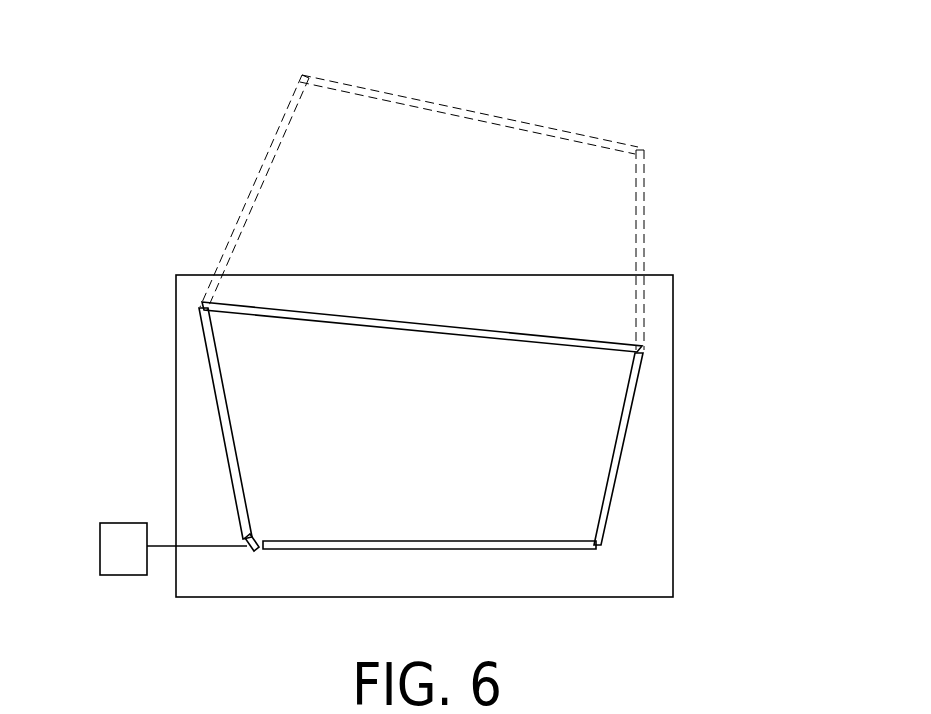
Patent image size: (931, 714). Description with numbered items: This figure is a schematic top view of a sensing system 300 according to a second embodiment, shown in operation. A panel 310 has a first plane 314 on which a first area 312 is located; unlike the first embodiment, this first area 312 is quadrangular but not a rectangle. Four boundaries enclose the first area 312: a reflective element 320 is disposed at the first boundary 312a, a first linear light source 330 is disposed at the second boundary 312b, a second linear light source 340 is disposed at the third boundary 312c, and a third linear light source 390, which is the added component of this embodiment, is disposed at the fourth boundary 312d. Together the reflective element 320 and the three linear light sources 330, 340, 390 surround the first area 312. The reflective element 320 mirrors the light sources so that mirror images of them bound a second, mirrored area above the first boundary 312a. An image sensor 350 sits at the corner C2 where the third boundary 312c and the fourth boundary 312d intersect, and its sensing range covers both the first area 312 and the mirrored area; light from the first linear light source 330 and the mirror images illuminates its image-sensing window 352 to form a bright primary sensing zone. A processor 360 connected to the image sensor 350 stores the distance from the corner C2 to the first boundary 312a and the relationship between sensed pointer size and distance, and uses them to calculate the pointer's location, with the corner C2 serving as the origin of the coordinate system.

The sensing system 300 is at (777, 658).
The panel 310 is at (658, 312).
The first area 312 is at (416, 416).
The first boundary 312a is at (232, 305).
The second boundary 312b is at (619, 440).
The third boundary 312c is at (429, 592).
The fourth boundary 312d is at (212, 346).
The first plane 314 is at (653, 361).
The reflective element 320 is at (275, 313).
The first linear light source 330 is at (630, 402).
The second linear light source 340 is at (475, 549).
The image sensor 350 is at (248, 551).
The image-sensing window 352 is at (262, 537).
The processor 360 is at (118, 577).
The third linear light source 390 is at (222, 413).
The corner C2 is at (248, 540).